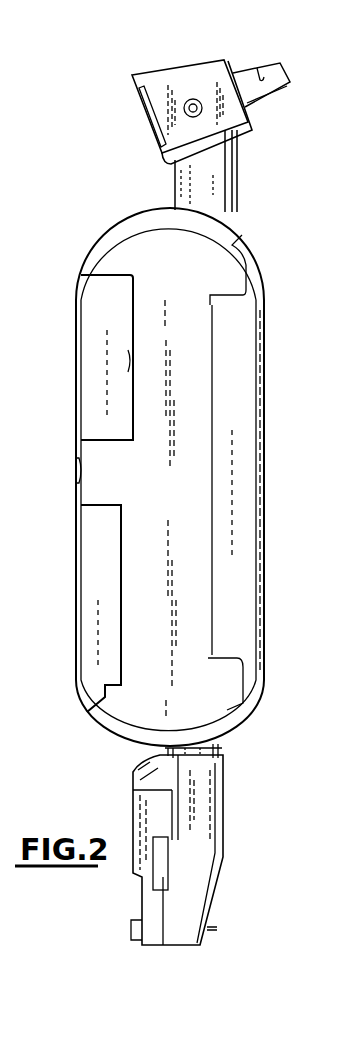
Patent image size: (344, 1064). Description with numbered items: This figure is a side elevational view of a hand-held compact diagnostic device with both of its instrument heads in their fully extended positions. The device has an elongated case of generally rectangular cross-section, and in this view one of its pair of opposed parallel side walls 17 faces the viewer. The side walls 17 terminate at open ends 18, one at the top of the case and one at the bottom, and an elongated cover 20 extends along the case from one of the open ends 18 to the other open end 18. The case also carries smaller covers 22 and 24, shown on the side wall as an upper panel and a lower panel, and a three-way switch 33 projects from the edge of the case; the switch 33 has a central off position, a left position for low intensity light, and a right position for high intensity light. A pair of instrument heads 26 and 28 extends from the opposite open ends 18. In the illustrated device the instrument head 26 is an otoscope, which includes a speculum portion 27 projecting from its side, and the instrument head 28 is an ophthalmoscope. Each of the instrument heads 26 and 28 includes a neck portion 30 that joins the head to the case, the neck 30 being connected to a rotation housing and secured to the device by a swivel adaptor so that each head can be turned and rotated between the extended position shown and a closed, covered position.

The side walls 17 is at (133, 230).
The open ends 18 is at (237, 232).
The elongated cover 20 is at (243, 432).
The smaller cover 22 is at (113, 593).
The smaller cover 24 is at (119, 331).
The instrument head 26 is at (178, 78).
The speculum portion 27 is at (278, 75).
The instrument head 28 is at (225, 828).
The neck portion 30 is at (217, 190).
The three-way switch 33 is at (70, 472).